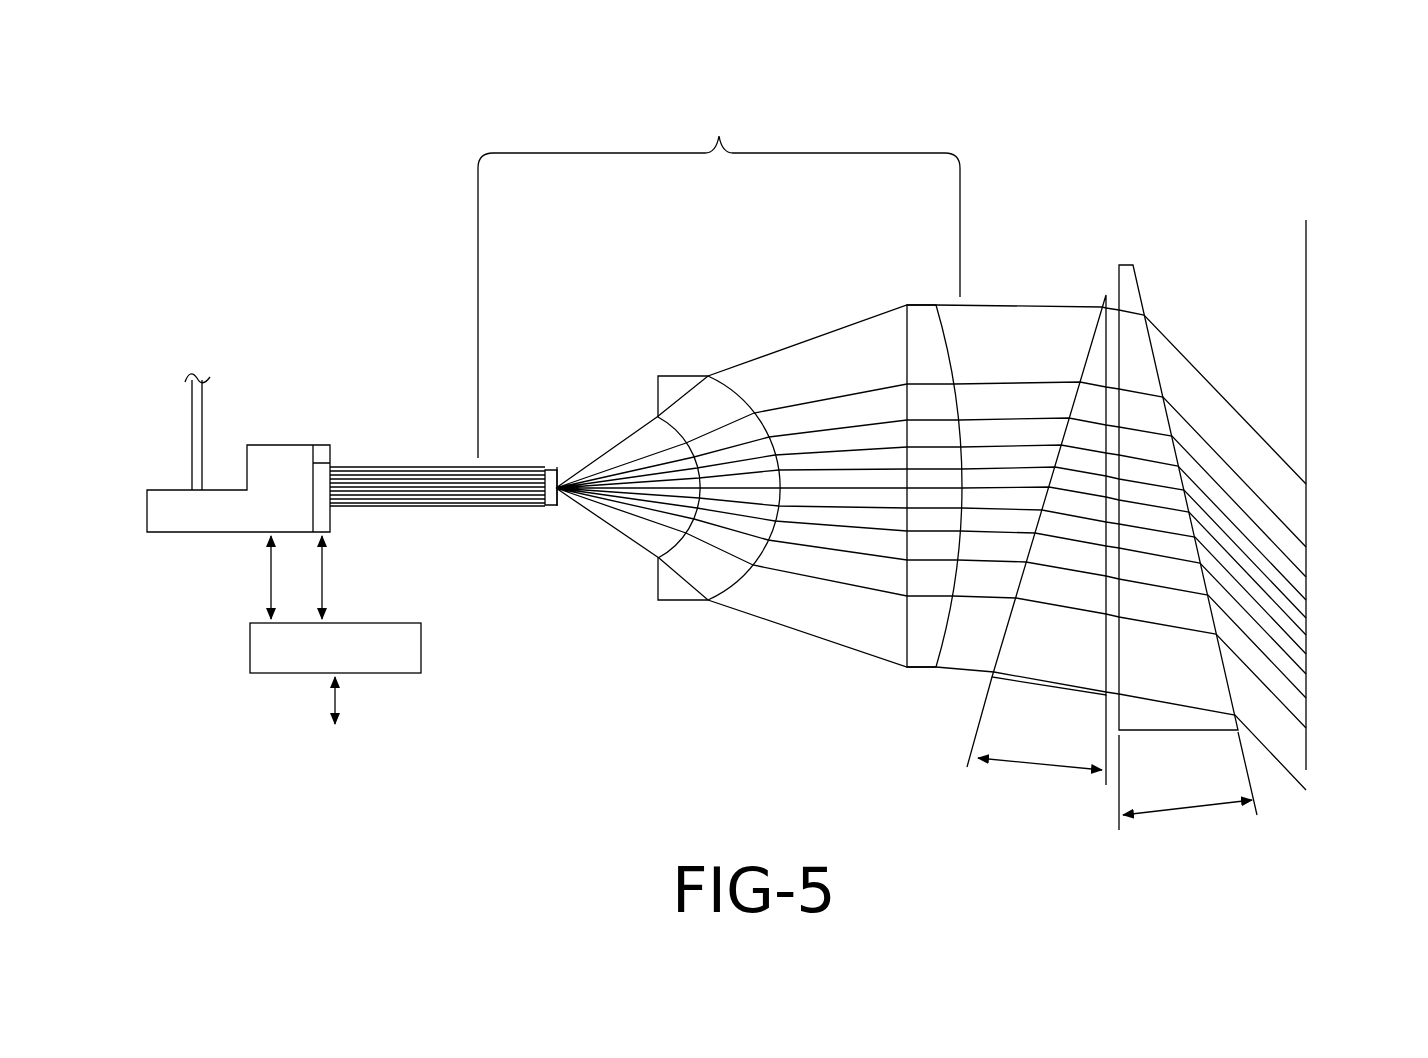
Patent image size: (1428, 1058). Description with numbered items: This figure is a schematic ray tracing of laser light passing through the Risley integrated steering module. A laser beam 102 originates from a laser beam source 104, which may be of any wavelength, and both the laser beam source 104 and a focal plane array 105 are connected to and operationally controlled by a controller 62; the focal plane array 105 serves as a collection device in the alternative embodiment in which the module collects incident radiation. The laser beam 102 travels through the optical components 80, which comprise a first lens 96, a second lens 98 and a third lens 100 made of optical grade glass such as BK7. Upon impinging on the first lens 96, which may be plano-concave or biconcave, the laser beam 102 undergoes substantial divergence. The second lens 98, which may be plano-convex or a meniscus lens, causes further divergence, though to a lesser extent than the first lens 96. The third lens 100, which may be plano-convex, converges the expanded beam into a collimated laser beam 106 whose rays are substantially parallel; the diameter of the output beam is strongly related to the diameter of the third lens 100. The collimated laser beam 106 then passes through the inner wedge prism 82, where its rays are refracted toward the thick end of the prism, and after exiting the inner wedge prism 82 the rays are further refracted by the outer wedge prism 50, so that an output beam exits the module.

The outer wedge prism 50 is at (1134, 268).
The controller 62 is at (383, 622).
The optical components 80 is at (719, 283).
The inner wedge prism 82 is at (1098, 318).
The first lens 96 is at (551, 471).
The second lens 98 is at (680, 388).
The third lens 100 is at (926, 318).
The laser beam 102 is at (437, 460).
The laser beam source 104 is at (215, 532).
The focal plane array 105 is at (334, 520).
The collimated laser beam 106 is at (945, 682).